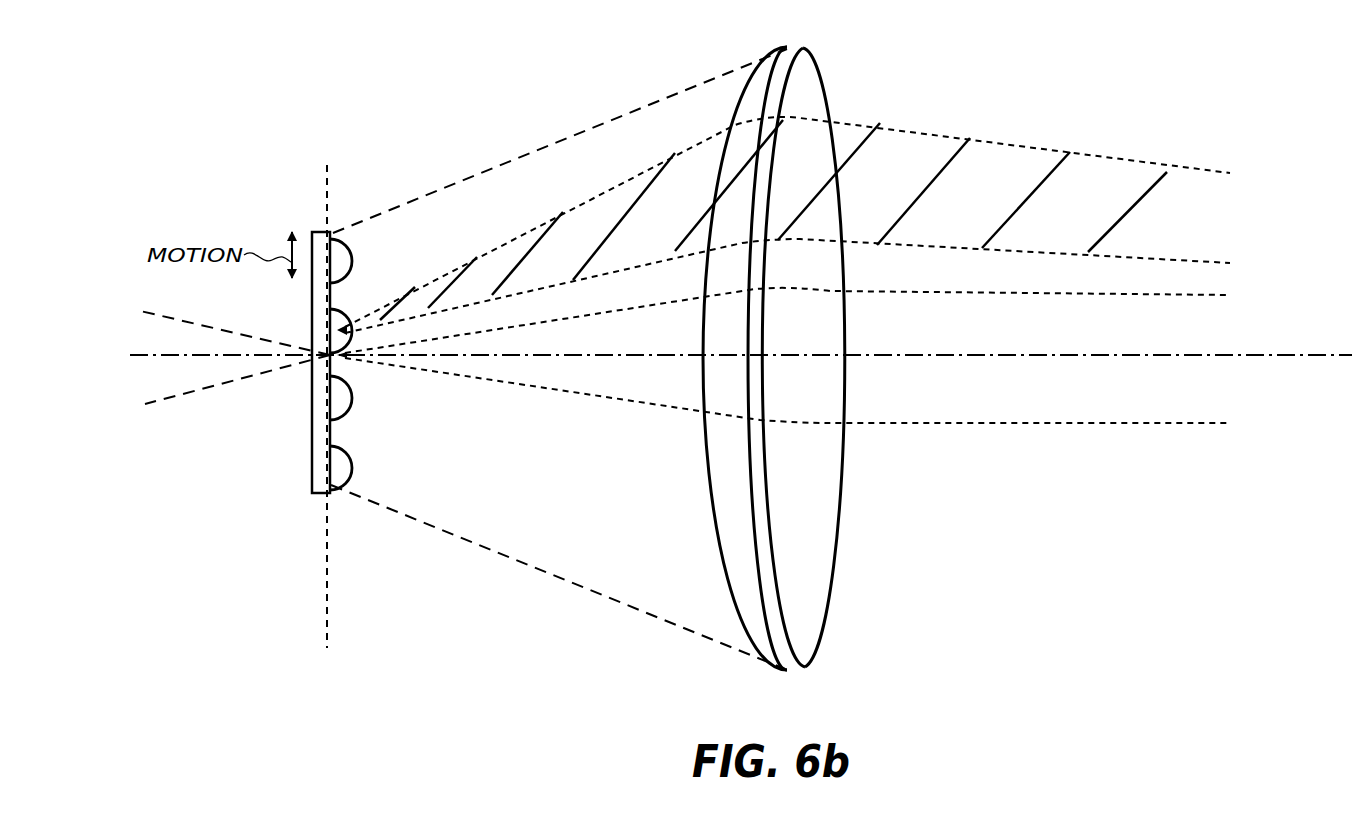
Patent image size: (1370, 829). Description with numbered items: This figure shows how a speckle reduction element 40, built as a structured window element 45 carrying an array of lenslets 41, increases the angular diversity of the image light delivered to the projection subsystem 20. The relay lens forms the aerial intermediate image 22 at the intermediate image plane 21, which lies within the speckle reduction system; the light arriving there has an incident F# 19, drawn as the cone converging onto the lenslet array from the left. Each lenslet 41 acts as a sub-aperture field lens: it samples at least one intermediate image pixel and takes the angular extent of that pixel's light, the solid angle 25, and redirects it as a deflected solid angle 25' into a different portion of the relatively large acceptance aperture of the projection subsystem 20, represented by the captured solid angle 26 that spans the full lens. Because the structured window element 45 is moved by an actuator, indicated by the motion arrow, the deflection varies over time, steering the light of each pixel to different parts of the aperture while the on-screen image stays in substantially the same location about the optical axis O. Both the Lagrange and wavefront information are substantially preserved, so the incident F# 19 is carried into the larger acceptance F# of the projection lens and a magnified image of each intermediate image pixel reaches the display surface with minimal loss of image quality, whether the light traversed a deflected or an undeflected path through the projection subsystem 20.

The incident F# 19 is at (146, 311).
The projection subsystem 20 is at (894, 636).
The intermediate image plane 21 is at (326, 605).
The intermediate image 22 is at (332, 294).
The solid angle 25 is at (783, 355).
The deflected solid angle 25' is at (783, 226).
The captured solid angle 26 is at (571, 583).
The speckle reduction element 40 is at (266, 385).
The lenslet 41 is at (349, 410).
The structured window element 45 is at (311, 493).
The optical axis O is at (1326, 357).